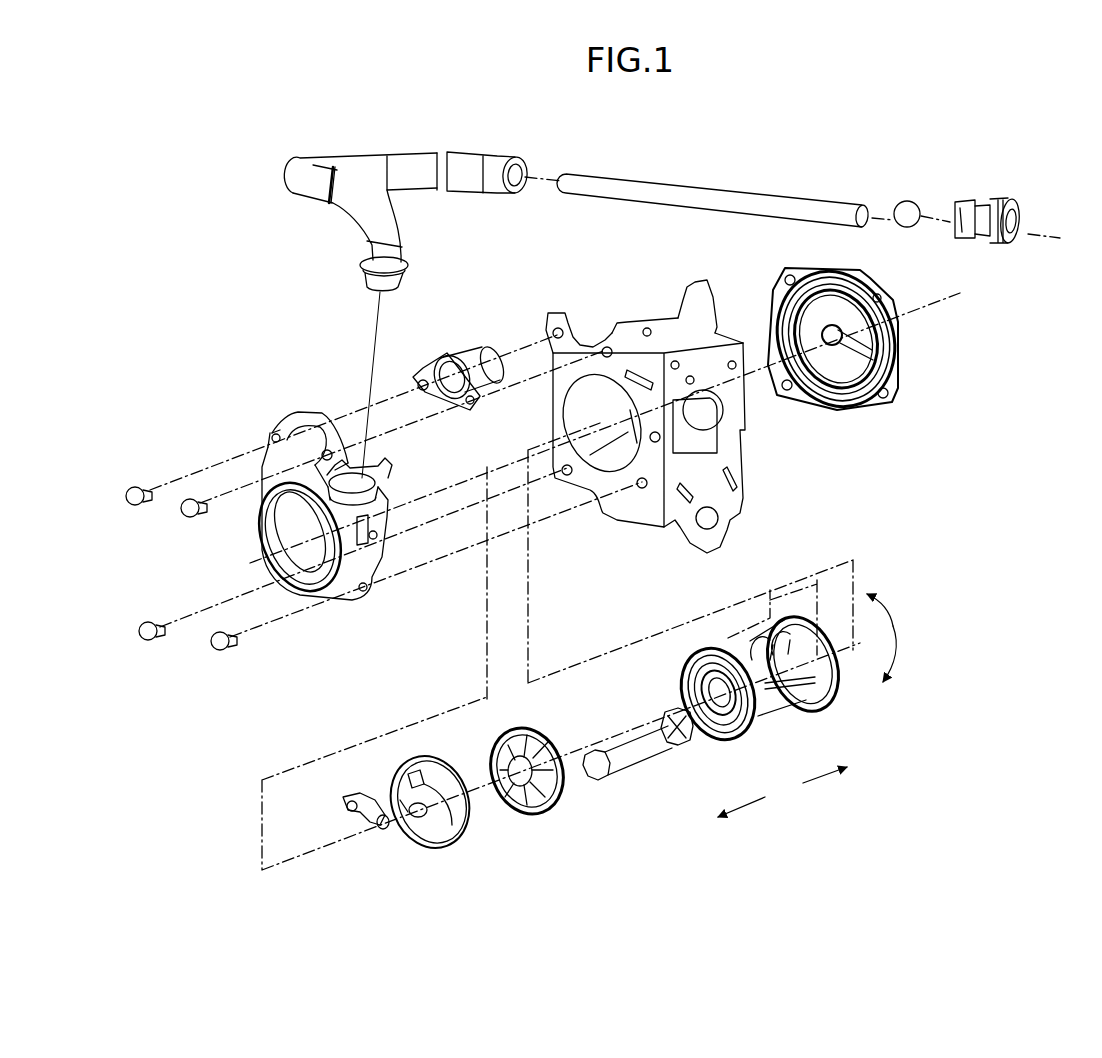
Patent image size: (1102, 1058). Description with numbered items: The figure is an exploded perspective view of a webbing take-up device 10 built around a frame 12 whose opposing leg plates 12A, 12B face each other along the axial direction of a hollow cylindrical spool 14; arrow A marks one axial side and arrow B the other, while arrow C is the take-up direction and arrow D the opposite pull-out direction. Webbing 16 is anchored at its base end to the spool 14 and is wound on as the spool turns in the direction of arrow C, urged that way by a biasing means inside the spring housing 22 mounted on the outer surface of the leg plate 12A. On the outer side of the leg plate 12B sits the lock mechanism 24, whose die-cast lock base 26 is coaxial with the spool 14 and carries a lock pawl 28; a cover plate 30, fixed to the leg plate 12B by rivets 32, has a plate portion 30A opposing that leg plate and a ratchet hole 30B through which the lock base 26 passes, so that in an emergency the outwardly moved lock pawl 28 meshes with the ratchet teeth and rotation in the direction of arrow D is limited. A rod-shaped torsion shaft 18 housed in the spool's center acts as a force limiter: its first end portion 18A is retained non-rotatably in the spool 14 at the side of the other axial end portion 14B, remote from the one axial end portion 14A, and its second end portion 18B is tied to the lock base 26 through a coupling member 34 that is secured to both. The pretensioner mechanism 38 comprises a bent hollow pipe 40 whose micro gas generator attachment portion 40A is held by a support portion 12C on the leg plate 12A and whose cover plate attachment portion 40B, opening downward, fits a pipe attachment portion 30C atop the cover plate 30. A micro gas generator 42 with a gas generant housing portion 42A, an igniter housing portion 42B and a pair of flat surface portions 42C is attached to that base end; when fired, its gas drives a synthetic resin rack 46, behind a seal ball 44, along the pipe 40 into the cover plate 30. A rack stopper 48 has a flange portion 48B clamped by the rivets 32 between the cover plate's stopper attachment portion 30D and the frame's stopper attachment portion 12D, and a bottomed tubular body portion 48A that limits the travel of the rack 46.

The webbing take-up device 10 is at (1013, 333).
The frame 12 is at (648, 397).
The leg plate 12A is at (663, 318).
The leg plate 12B is at (562, 385).
The support portion 12C is at (723, 292).
The stopper attachment portion 12D is at (598, 330).
The spool 14 is at (788, 705).
The one axial direction end portion 14A is at (722, 745).
The other axial direction end portion 14B is at (828, 713).
The webbing 16 is at (752, 625).
The torsion shaft 18 is at (644, 769).
The first end portion 18A is at (679, 730).
The second end portion 18B is at (597, 768).
The spring housing 22 is at (855, 278).
The lock mechanism 24 is at (598, 785).
The lock base 26 is at (472, 850).
The lock pawl 28 is at (355, 813).
The cover plate 30 is at (323, 459).
The plate portion 30A is at (280, 565).
The ratchet hole 30B is at (293, 520).
The pipe attachment portion 30C is at (390, 478).
The stopper attachment portion 30D is at (343, 420).
The rivets 32 is at (138, 508).
The coupling member 34 is at (540, 822).
The pretensioner mechanism 38 is at (391, 187).
The pipe 40 is at (407, 150).
The micro gas generator attachment portion 40A is at (478, 158).
The cover plate attachment portion 40B is at (360, 263).
The micro gas generator 42 is at (978, 222).
The gas generant housing portion 42A is at (955, 200).
The igniter housing portion 42B is at (990, 240).
The flat surface portions 42C is at (955, 240).
The seal ball 44 is at (907, 202).
The rack 46 is at (722, 185).
The rack stopper 48 is at (464, 333).
The body portion 48A is at (460, 352).
The flange portion 48B is at (427, 378).
The arrow A is at (745, 813).
The arrow B is at (810, 788).
The arrow C is at (898, 663).
The arrow D is at (893, 614).